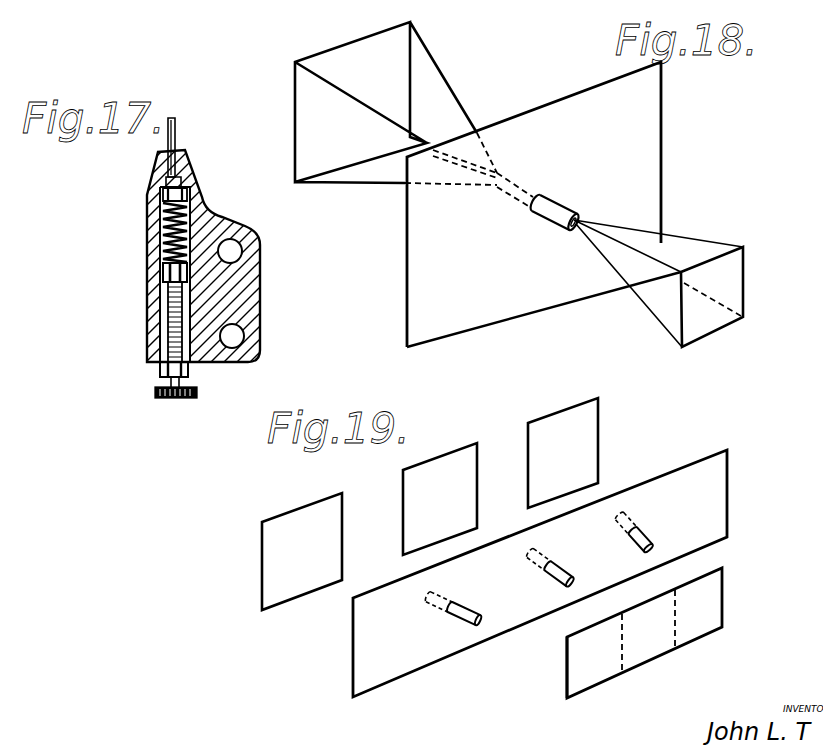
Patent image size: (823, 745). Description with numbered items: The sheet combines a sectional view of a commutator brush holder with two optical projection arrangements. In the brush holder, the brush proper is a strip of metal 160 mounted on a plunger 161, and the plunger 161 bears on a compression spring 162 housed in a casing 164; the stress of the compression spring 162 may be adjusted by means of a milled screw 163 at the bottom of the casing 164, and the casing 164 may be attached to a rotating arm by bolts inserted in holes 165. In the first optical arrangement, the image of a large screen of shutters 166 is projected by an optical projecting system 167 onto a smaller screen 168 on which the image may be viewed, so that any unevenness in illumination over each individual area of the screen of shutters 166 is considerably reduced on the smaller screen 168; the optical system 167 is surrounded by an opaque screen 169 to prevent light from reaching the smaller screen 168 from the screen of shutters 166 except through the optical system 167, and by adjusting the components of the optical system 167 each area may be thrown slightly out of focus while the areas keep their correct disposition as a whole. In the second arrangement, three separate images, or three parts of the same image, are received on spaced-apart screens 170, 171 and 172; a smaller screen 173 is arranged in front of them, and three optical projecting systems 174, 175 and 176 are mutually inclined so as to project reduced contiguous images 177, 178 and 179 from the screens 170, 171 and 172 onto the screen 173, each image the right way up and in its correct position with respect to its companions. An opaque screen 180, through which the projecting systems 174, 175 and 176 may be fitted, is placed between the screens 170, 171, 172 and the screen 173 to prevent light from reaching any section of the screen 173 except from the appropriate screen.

In FIG. 17, the strip of metal 160 is at (171, 131).
In FIG. 17, the plunger 161 is at (167, 195).
In FIG. 17, the compression spring 162 is at (200, 200).
In FIG. 17, the milled screw 163 is at (183, 385).
In FIG. 17, the casing 164 is at (153, 323).
In FIG. 17, the holes 165 is at (230, 251).
In FIG. 18, the screen of shutters 166 is at (333, 72).
In FIG. 18, the optical projecting system 167 is at (550, 205).
In FIG. 18, the smaller screen 168 is at (697, 308).
In FIG. 18, the opaque screen 169 is at (497, 145).
In FIG. 19, the screen 170 is at (312, 527).
In FIG. 19, the screen 171 is at (465, 467).
In FIG. 19, the screen 172 is at (587, 432).
In FIG. 19, the smaller screen 173 is at (723, 587).
In FIG. 19, the optical projecting system 174 is at (453, 615).
In FIG. 19, the optical projecting system 175 is at (558, 580).
In FIG. 19, the optical projecting system 176 is at (647, 540).
In FIG. 19, the reduced contiguous image 177 is at (583, 675).
In FIG. 19, the reduced contiguous image 178 is at (642, 640).
In FIG. 19, the reduced contiguous image 179 is at (685, 610).
In FIG. 19, the opaque screen 180 is at (693, 465).